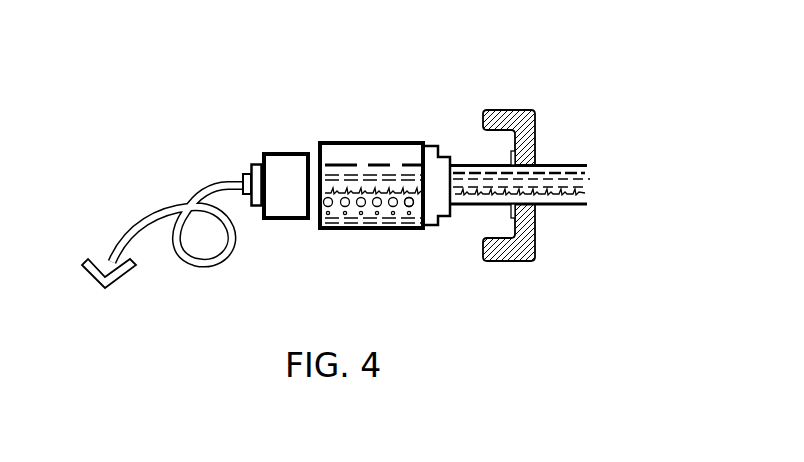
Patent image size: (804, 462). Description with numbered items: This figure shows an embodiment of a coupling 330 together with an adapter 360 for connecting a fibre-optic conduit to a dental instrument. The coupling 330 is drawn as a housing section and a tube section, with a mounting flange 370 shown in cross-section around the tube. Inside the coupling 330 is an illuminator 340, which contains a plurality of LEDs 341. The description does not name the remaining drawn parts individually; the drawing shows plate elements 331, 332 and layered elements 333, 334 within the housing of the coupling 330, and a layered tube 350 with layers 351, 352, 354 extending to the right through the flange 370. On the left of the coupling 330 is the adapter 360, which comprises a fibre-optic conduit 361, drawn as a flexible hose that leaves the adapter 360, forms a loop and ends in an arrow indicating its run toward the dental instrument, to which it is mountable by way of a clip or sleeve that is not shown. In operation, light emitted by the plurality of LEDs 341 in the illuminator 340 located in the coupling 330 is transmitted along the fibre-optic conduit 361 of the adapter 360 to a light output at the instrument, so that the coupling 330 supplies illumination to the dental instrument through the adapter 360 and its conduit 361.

The coupling 330 is at (338, 70).
The second electrode plate 331 is at (380, 163).
The first electrode plate 332 is at (335, 163).
The lower dielectric layer 333 is at (378, 224).
The discharge channels 334 is at (345, 207).
The illuminator 340 is at (362, 112).
The plurality of LEDs 341 is at (410, 207).
The tube 350 is at (559, 168).
The outer electrode 351 is at (584, 173).
The dielectric layer 352 is at (597, 180).
The inner electrode 354 is at (590, 197).
The adapter 360 is at (292, 220).
The fibre-optic conduit 361 is at (152, 217).
The mounting flange 370 is at (497, 115).